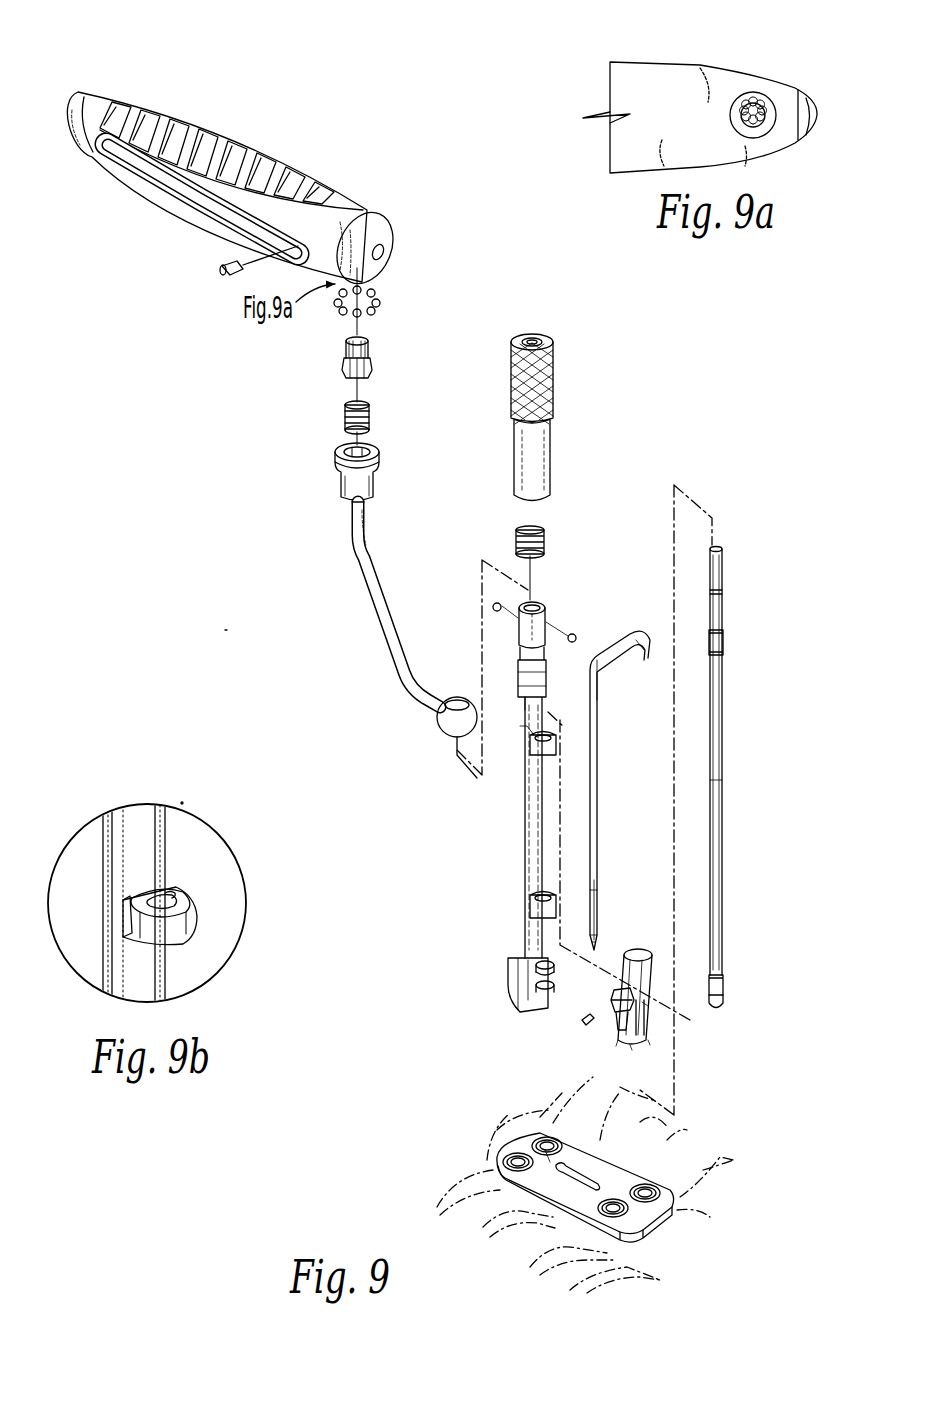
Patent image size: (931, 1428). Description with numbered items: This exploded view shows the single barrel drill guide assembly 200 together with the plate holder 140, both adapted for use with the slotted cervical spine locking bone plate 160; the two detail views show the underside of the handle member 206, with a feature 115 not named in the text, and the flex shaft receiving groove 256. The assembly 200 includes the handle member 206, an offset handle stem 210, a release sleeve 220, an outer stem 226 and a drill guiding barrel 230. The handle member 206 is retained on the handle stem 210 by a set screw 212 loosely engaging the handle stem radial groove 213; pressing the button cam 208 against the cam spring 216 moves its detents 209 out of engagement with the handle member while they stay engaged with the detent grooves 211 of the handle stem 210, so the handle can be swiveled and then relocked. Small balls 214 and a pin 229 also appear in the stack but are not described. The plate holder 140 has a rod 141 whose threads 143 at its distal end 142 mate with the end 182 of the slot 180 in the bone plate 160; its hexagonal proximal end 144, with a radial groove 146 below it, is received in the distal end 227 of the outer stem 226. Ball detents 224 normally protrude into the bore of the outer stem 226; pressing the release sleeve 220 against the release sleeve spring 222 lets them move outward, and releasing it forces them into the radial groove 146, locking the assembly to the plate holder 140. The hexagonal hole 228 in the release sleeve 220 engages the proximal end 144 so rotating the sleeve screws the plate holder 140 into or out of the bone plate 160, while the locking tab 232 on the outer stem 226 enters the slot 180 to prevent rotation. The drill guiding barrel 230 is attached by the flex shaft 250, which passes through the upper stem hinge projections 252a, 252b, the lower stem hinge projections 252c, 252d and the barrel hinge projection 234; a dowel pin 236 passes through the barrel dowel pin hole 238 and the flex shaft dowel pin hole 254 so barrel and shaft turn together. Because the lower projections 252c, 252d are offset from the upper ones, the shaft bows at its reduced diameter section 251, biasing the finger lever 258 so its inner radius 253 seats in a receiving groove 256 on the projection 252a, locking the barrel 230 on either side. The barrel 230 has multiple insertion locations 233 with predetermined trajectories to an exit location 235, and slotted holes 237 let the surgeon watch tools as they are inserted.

In FIG. 9A, the handle member 206 is at (712, 50).
In FIG. 9, the handle member 206 is at (264, 132).
In FIG. 9A, the drive socket 115 is at (760, 98).
In FIG. 9, the set screw 212 is at (224, 282).
In FIG. 9, the ball bearings 214 is at (386, 311).
In FIG. 9, the button cam 208 is at (344, 345).
In FIG. 9, the detents 209 is at (340, 375).
In FIG. 9, the cam spring 216 is at (372, 402).
In FIG. 9, the detent grooves 211 is at (345, 450).
In FIG. 9, the handle stem radial groove 213 is at (335, 470).
In FIG. 9, the offset handle stem 210 is at (362, 600).
In FIG. 9, the single barrel drill guide assembly 200 is at (228, 632).
In FIG. 9B, the flex shaft receiving groove 256 is at (182, 800).
In FIG. 9, the hexagonal hole 228 is at (533, 332).
In FIG. 9, the release sleeve 220 is at (567, 345).
In FIG. 9, the release sleeve spring 222 is at (552, 540).
In FIG. 9, the ball detents 224 is at (490, 604).
In FIG. 9, the pin 229 is at (545, 610).
In FIG. 9, the outer stem 226 is at (520, 850).
In FIG. 9, the inner radius 253 is at (588, 668).
In FIG. 9, the flex shaft finger lever 258 is at (640, 638).
In FIG. 9, the upper stem hinge projection 252a is at (548, 732).
In FIG. 9, the upper stem hinge projection 252b is at (530, 910).
In FIG. 9, the lower stem hinge projection 252c is at (540, 962).
In FIG. 9, the lower stem hinge projection 252d is at (535, 985).
In FIG. 9, the flex shaft 250 is at (605, 775).
In FIG. 9, the reduced diameter section 251 is at (600, 905).
In FIG. 9, the flex shaft dowel pin hole 254 is at (604, 945).
In FIG. 9, the locking tab 232 is at (512, 1010).
In FIG. 9, the distal end 227 is at (522, 1015).
In FIG. 9, the insertion locations 233 is at (648, 955).
In FIG. 9, the drill guiding barrel hinge projection 234 is at (612, 1010).
In FIG. 9, the dowel pin 236 is at (578, 1030).
In FIG. 9, the slotted holes 237 is at (650, 1005).
In FIG. 9, the drill guiding barrel 230 is at (655, 1020).
In FIG. 9, the drill guiding barrel dowel pin hole 238 is at (620, 1045).
In FIG. 9, the exit location 235 is at (636, 1050).
In FIG. 9, the plate holder 140 is at (732, 773).
In FIG. 9, the proximal end 144 is at (728, 566).
In FIG. 9, the radial groove 146 is at (731, 637).
In FIG. 9, the rod 141 is at (728, 867).
In FIG. 9, the distal end 142 is at (730, 1001).
In FIG. 9, the threads 143 is at (718, 1012).
In FIG. 9, the slot 180 is at (582, 1170).
In FIG. 9, the end of slot 182 is at (555, 1160).
In FIG. 9, the bone plate 160 is at (555, 1218).